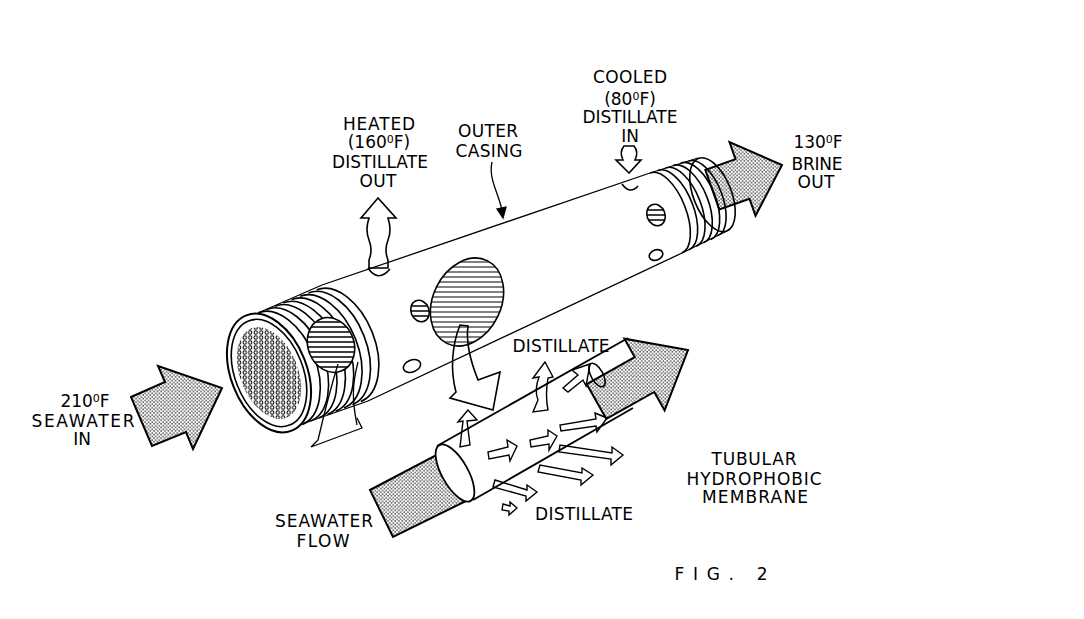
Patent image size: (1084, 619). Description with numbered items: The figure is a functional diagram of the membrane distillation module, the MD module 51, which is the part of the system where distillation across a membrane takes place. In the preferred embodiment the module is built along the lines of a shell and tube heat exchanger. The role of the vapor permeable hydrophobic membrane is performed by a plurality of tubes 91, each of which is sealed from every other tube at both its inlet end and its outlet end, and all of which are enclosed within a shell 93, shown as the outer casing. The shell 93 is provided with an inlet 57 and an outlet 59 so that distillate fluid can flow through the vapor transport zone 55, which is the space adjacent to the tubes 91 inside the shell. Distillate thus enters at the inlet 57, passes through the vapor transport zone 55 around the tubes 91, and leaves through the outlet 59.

The MD module 51 is at (510, 247).
The shell 93 is at (527, 212).
The inlet 57 is at (250, 424).
The tube 91 is at (352, 408).
The outlet 59 is at (727, 217).
The vapor transport zone 55 is at (505, 386).